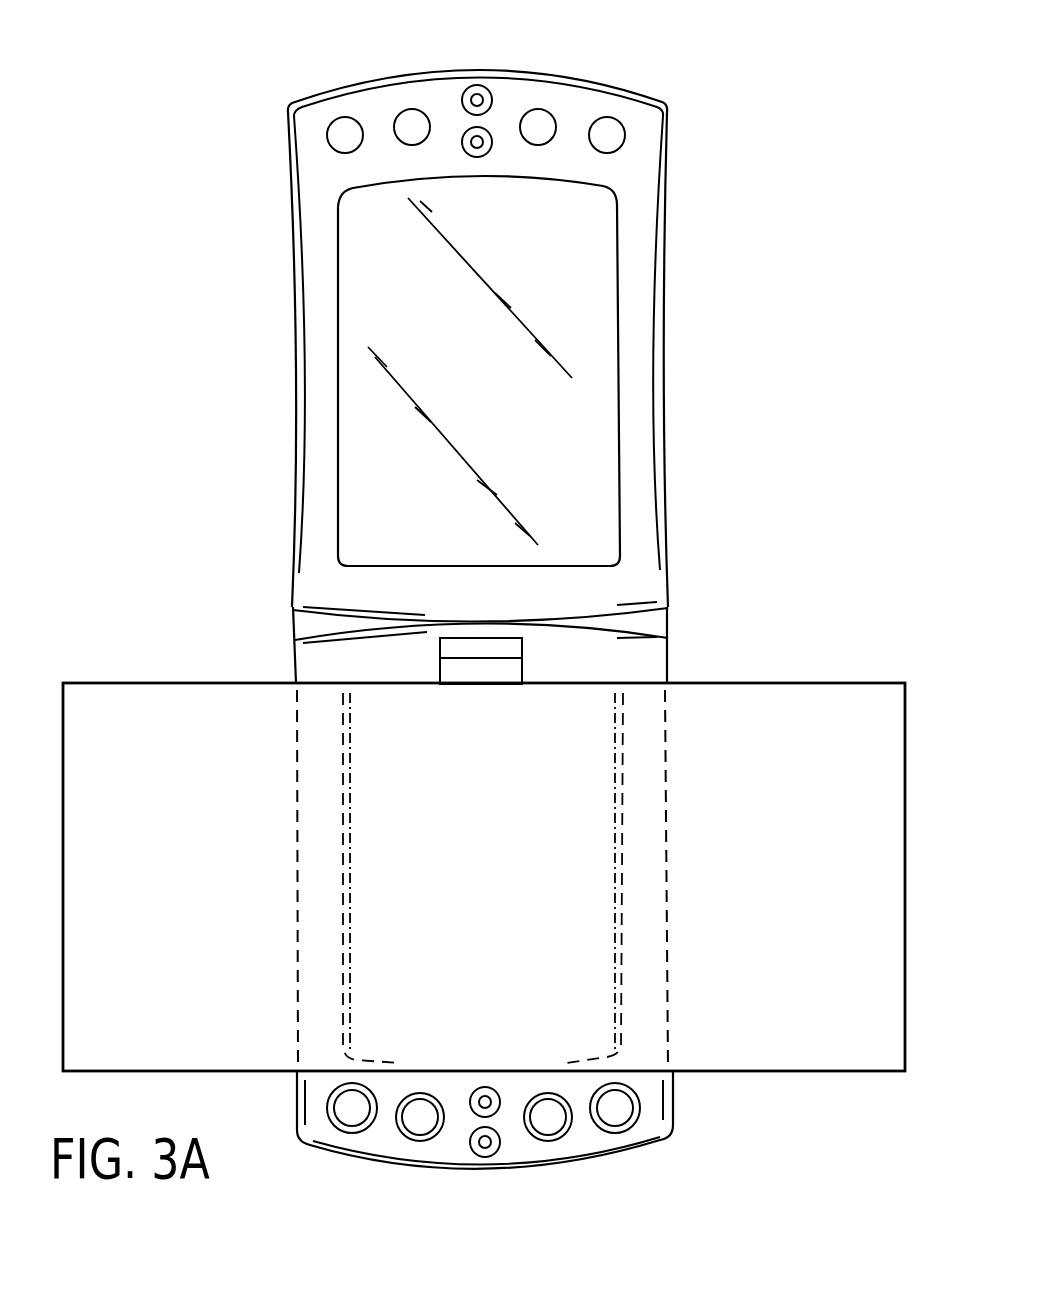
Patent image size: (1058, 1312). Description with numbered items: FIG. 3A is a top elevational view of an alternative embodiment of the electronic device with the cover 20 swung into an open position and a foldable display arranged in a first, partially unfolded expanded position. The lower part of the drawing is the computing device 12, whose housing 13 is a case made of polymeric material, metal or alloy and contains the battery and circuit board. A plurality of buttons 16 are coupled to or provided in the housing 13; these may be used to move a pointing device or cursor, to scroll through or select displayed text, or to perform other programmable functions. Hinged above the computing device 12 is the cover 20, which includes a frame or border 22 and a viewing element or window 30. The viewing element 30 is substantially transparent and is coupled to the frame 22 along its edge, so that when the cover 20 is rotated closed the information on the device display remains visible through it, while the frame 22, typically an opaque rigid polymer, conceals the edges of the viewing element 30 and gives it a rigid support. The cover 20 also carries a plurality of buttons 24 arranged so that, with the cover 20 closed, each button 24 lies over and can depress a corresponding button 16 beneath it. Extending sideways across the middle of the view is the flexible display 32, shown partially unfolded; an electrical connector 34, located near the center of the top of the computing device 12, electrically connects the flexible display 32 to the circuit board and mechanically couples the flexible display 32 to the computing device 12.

The computing device 12 is at (642, 1127).
The housing 13 is at (660, 1116).
The buttons 16 is at (486, 1152).
The cover 20 is at (636, 174).
The frame 22 is at (632, 451).
The buttons 24 is at (475, 87).
The viewing element 30 is at (596, 307).
The flexible display 32 is at (812, 688).
The electrical connector 34 is at (513, 648).